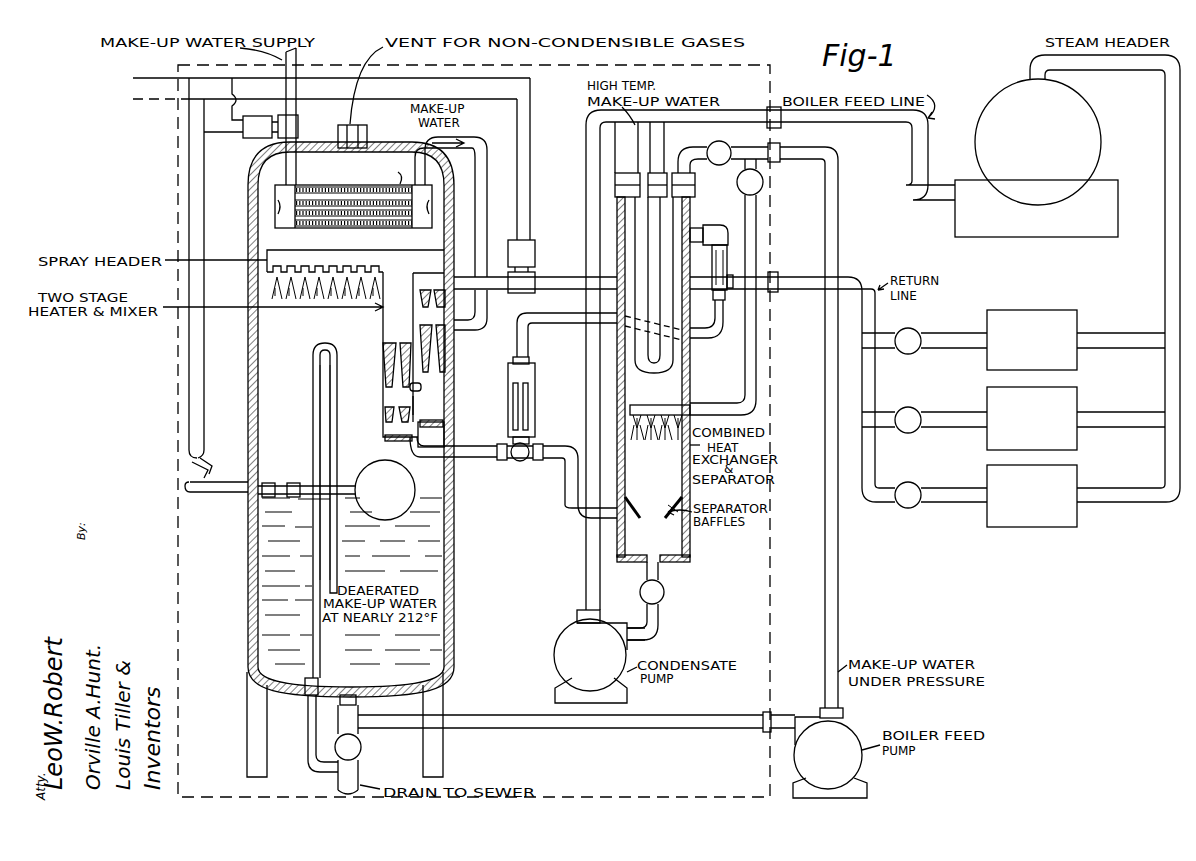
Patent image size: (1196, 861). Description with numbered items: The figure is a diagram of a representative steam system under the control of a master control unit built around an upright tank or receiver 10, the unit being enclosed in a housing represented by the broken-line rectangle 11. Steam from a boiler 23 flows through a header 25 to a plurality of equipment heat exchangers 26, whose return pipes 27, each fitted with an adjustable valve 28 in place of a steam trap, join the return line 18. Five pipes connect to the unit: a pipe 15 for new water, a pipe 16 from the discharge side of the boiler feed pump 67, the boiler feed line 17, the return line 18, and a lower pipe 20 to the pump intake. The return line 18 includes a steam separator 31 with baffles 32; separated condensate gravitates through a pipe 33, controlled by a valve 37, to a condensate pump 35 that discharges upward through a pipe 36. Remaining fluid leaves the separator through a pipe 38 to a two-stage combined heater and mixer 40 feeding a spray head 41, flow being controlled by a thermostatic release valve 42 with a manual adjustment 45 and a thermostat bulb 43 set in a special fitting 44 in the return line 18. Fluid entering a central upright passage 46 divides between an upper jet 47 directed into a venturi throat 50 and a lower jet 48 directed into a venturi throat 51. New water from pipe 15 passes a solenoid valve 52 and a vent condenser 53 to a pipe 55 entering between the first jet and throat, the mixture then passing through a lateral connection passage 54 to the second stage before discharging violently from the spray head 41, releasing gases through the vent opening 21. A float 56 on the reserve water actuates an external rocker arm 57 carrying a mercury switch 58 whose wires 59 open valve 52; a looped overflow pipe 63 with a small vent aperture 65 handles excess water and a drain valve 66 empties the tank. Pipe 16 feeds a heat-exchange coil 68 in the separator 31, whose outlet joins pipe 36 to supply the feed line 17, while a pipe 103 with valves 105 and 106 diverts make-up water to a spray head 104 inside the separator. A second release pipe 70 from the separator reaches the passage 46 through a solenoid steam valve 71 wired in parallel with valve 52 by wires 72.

The upright tank or receiver 10 is at (454, 612).
The housing or casing 11 is at (770, 66).
The pipe for supplying new water 15 is at (297, 56).
The pipe connected to discharge side of boiler feed pump 16 is at (810, 147).
The boiler feed line 17 is at (912, 158).
The return line 18 is at (855, 277).
The pipe to intake side of boiler feed pump 20 is at (771, 713).
The vent opening 21 is at (355, 125).
The boiler 23 is at (998, 100).
The header 25 is at (1165, 262).
The equipment heat exchangers or steam-using devices 26 is at (1077, 370).
The return pipes 27 is at (966, 330).
The adjustable valve 28 is at (902, 329).
The steam separator 31 is at (690, 375).
The baffles 32 is at (670, 515).
The pipe 33 is at (660, 573).
The condensate pump 35 is at (626, 648).
The pipe 36 is at (586, 582).
The valve 37 is at (664, 594).
The pipe 38 is at (565, 512).
The two-stage combined heater and mixer 40 is at (383, 331).
The spray head 41 is at (318, 250).
The thermostatic release valve 42 is at (528, 447).
The thermostat bulb 43 is at (733, 230).
The special fitting 44 is at (712, 258).
The manual adjustment 45 is at (535, 426).
The central upright passage 46 is at (415, 405).
The upper jet 47 is at (446, 300).
The lower jet 48 is at (385, 414).
The venturi throat 50 is at (455, 343).
The venturi throat 51 is at (385, 376).
The solenoid valve 52 is at (298, 124).
The vent condenser 53 is at (378, 230).
The lateral connection passage 54 is at (421, 387).
The pipe 55 is at (487, 180).
The float 56 is at (366, 470).
The external rocker arm 57 is at (188, 480).
The mercury switch 58 is at (210, 464).
The wires 59 is at (204, 380).
The overflow pipe 63 is at (313, 383).
The vent aperture 65 is at (320, 345).
The drain valve 66 is at (361, 748).
The boiler feed pump 67 is at (852, 727).
The heat-exchange coil 68 is at (673, 352).
The second release pipe 70 is at (568, 277).
The solenoid steam valve 71 is at (520, 294).
The wires 72 is at (531, 133).
The pipe 103 is at (757, 366).
The spray head 104 is at (640, 405).
The valve 105 is at (763, 185).
The valve 106 is at (722, 142).